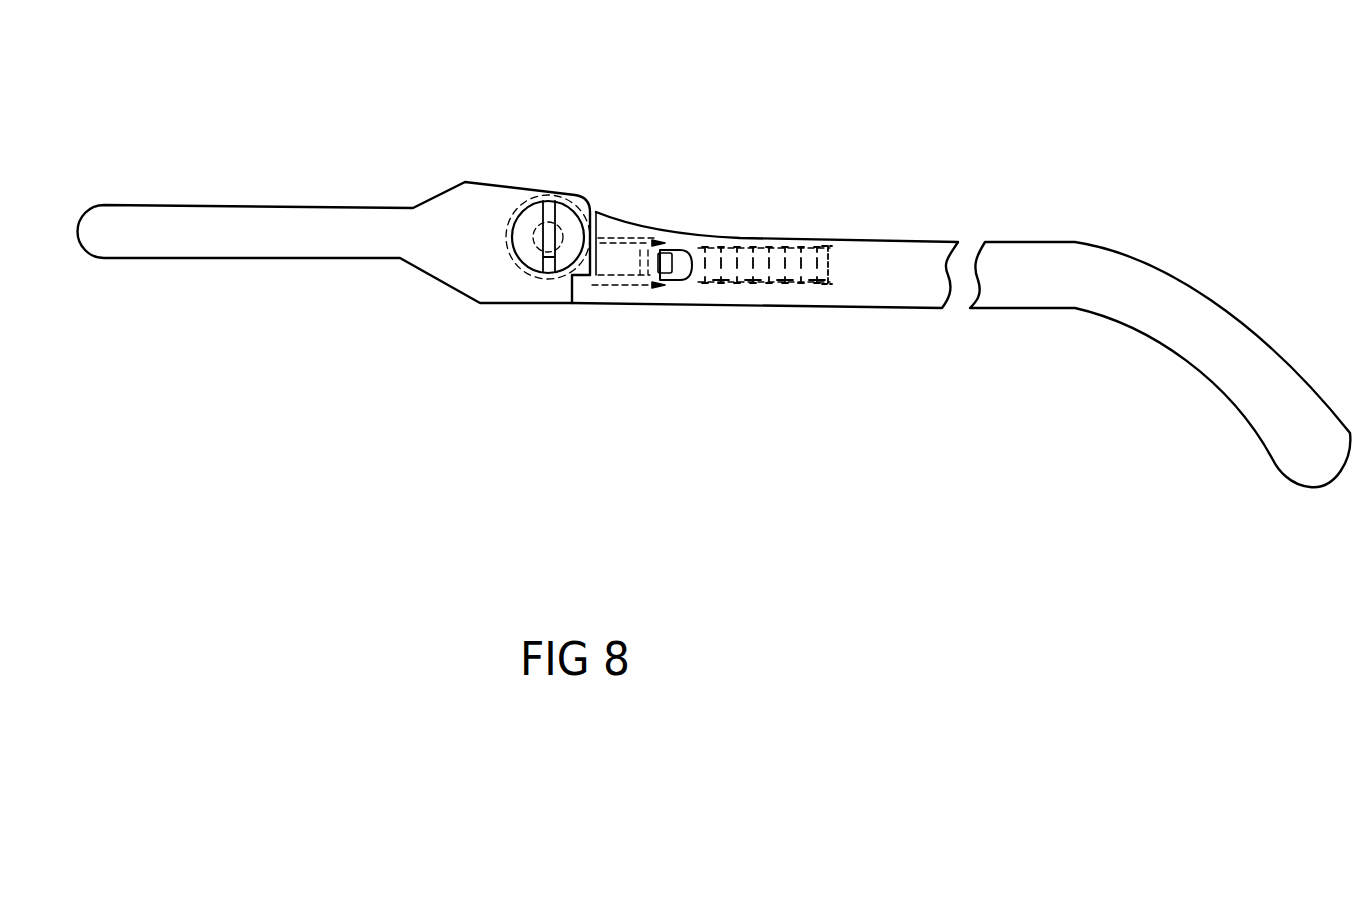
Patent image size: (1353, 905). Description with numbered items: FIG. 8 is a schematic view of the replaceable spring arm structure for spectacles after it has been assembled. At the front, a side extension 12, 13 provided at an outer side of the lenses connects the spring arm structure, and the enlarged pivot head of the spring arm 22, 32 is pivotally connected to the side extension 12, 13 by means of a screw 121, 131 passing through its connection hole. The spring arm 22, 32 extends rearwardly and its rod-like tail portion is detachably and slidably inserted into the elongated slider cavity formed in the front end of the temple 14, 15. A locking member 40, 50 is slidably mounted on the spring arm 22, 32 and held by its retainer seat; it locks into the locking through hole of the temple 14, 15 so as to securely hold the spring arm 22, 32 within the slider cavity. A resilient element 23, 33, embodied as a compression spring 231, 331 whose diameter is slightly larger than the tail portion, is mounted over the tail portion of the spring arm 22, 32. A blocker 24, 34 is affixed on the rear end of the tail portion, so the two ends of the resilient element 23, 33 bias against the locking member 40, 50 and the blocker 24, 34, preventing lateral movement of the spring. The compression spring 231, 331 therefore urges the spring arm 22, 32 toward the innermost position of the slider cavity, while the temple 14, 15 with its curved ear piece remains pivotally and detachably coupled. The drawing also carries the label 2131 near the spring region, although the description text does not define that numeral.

The side extension 12 is at (334, 278).
The side extension 13 is at (178, 238).
The screw 121 is at (476, 303).
The screw 131 is at (532, 258).
The spring arm 22 is at (765, 324).
The spring arm 32 is at (630, 258).
The locking member 40 is at (665, 208).
The locking member 50 is at (680, 233).
The resilient element 23 is at (820, 212).
The resilient element 33 is at (820, 212).
The compression spring 231 is at (761, 205).
The compression spring 331 is at (777, 250).
The engaging teeth 2131 is at (762, 283).
The blocker 24 is at (882, 217).
The blocker 34 is at (827, 247).
The temple 14 is at (1160, 319).
The temple 15 is at (1078, 267).